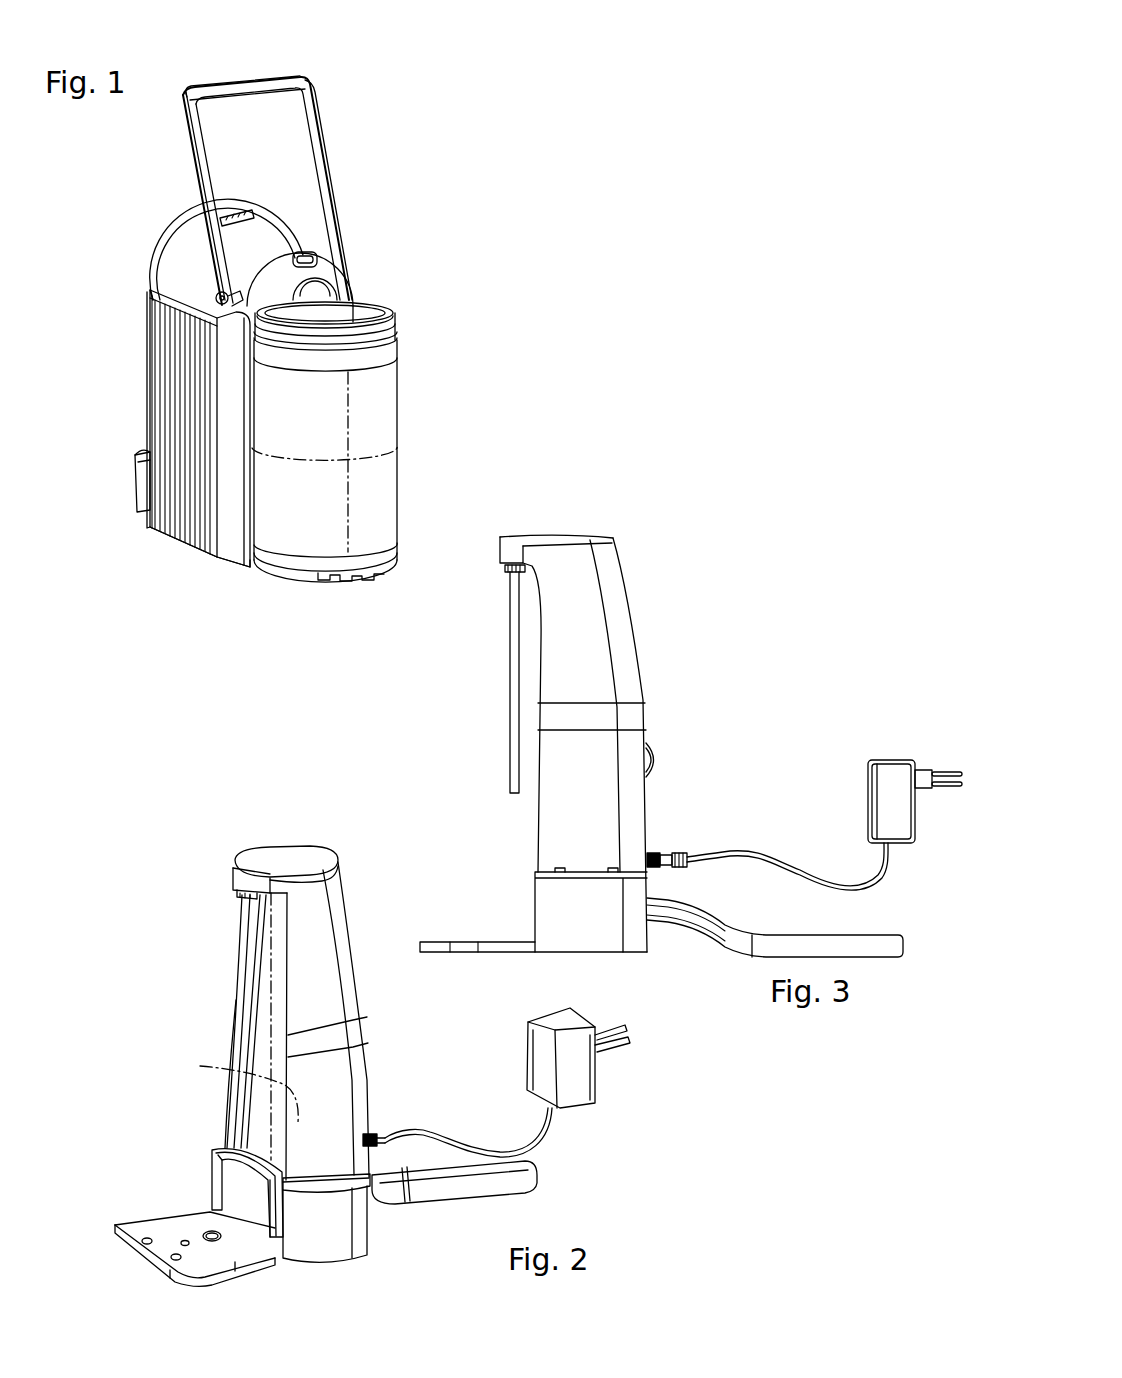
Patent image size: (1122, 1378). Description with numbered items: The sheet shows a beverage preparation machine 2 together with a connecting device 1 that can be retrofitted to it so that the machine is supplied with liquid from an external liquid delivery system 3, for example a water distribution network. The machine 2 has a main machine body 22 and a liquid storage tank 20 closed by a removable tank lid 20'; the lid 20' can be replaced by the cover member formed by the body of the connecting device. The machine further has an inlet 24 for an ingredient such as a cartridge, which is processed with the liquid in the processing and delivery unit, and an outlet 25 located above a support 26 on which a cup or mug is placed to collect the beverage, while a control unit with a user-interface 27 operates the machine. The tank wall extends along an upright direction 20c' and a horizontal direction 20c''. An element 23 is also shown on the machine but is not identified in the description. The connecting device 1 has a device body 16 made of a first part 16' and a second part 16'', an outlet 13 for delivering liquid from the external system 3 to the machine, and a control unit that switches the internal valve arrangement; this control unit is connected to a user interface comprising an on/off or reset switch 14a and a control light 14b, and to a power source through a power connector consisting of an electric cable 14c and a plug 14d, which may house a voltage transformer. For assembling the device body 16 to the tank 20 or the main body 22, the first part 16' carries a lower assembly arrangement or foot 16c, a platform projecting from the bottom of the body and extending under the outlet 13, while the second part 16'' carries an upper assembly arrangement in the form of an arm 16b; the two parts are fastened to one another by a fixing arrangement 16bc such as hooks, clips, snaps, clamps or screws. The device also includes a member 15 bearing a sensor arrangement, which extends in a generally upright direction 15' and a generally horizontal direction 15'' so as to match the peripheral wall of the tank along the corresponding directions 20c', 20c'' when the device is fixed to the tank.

In FIG. 2, the connecting device 1 is at (120, 794).
In FIG. 3, the connecting device 1 is at (660, 556).
In FIG. 1, the beverage preparation machine 2 is at (441, 146).
In FIG. 2, the external liquid delivery system 3 is at (530, 1172).
In FIG. 3, the external liquid delivery system 3 is at (858, 947).
In FIG. 2, the outlet 13 is at (242, 942).
In FIG. 3, the outlet 13 is at (513, 750).
In FIG. 3, the reset switch 14a is at (658, 763).
In FIG. 2, the control light 14b is at (320, 853).
In FIG. 2, the electric cable 14c is at (410, 1133).
In FIG. 3, the electric cable 14c is at (757, 853).
In FIG. 2, the plug 14d is at (540, 1070).
In FIG. 3, the plug 14d is at (887, 780).
In FIG. 2, the member 15 is at (217, 1165).
In FIG. 2, the generally upright direction 15' is at (222, 1026).
In FIG. 2, the generally horizontal direction 15'' is at (211, 1065).
In FIG. 2, the device body 16 is at (318, 1057).
In FIG. 3, the device body 16 is at (575, 743).
In FIG. 2, the first part 16' is at (326, 1258).
In FIG. 2, the second part 16'' is at (358, 1026).
In FIG. 2, the arm 16b is at (240, 863).
In FIG. 3, the arm 16b is at (510, 552).
In FIG. 2, the fixing arrangement 16bc is at (347, 1177).
In FIG. 2, the lower assembly arrangement 16c is at (162, 1237).
In FIG. 3, the lower assembly arrangement 16c is at (512, 947).
In FIG. 1, the liquid storage tank 20 is at (372, 416).
In FIG. 1, the removable tank lid 20' is at (349, 300).
In FIG. 1, the corresponding direction of tank wall 20c' is at (411, 442).
In FIG. 1, the corresponding direction of tank wall 20c'' is at (372, 423).
In FIG. 1, the main machine body 22 is at (197, 500).
In FIG. 1, the carrying handle 23 is at (229, 93).
In FIG. 1, the inlet 24 is at (240, 217).
In FIG. 1, the outlet 25 is at (152, 273).
In FIG. 1, the support 26 is at (138, 460).
In FIG. 1, the user-interface 27 is at (300, 260).